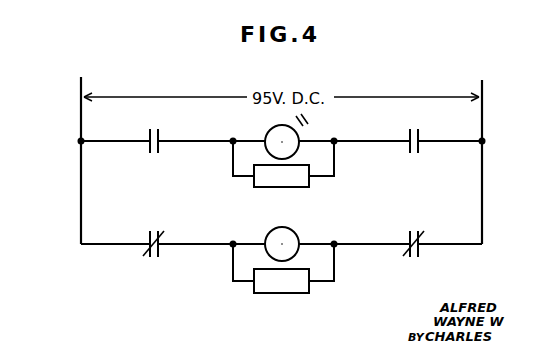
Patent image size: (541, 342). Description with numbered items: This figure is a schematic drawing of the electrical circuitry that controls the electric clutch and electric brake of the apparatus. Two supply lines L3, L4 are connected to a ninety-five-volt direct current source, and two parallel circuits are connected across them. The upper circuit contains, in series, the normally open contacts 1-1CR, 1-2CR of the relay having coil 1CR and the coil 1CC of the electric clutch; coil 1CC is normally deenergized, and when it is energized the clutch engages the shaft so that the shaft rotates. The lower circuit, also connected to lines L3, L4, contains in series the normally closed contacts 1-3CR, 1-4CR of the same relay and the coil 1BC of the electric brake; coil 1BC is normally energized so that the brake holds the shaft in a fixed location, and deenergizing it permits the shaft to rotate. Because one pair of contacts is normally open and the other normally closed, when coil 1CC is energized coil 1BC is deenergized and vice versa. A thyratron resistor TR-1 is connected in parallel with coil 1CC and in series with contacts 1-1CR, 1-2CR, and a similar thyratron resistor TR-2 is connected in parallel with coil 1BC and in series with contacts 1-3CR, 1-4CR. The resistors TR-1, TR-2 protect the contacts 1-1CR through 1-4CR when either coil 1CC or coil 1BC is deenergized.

The line L3 is at (81, 112).
The line L4 is at (482, 120).
The normally open contact 1-1CR is at (148, 131).
The normally open contact 1-2CR is at (408, 132).
The normally closed contact 1-3CR is at (148, 233).
The normally closed contact 1-4CR is at (408, 233).
The coil 1CC is at (266, 134).
The coil 1BC is at (268, 233).
The thyratron resistor TR-1 is at (269, 187).
The thyratron resistor TR-2 is at (283, 293).